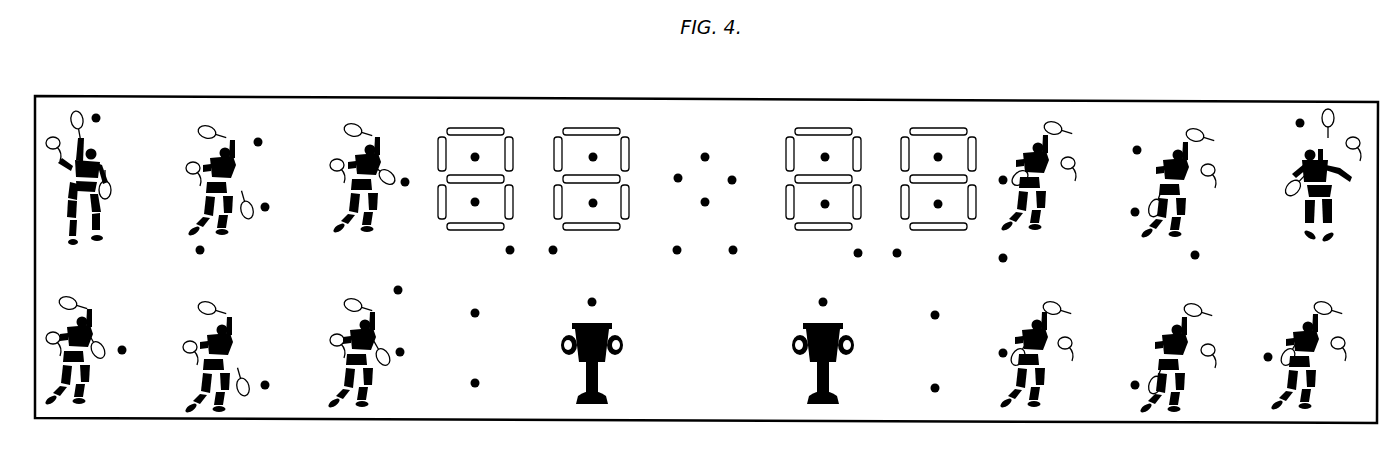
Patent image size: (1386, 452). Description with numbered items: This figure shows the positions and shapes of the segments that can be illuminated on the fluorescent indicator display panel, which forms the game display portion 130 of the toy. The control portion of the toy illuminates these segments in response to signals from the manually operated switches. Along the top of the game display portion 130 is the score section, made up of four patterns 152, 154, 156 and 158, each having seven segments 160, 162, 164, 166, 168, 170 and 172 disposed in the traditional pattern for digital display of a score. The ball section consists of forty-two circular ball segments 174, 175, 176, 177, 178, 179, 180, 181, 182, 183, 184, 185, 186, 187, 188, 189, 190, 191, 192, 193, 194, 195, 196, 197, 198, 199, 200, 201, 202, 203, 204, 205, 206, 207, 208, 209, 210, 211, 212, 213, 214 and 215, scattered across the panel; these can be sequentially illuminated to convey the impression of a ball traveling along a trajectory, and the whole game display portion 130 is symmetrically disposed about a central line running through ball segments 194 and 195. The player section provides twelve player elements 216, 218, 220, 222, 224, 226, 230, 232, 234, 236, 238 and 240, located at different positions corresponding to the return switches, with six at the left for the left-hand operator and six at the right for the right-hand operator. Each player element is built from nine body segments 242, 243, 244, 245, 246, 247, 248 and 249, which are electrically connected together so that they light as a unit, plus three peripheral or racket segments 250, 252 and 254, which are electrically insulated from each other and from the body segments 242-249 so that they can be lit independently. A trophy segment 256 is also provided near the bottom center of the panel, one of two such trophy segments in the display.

The game display portion 130 is at (923, 78).
The pattern 152 is at (455, 152).
The pattern 154 is at (590, 166).
The pattern 156 is at (804, 162).
The pattern 158 is at (938, 163).
The segment 160 is at (455, 128).
The segment 162 is at (510, 140).
The segment 164 is at (977, 215).
The segment 166 is at (948, 231).
The segment 168 is at (903, 228).
The segment 170 is at (905, 140).
The segment 172 is at (910, 180).
The ball segment 174 is at (100, 117).
The ball segment 175 is at (122, 346).
The ball segment 176 is at (196, 250).
The ball segment 177 is at (258, 138).
The ball segment 178 is at (267, 204).
The ball segment 179 is at (265, 381).
The ball segment 180 is at (405, 186).
The ball segment 181 is at (398, 286).
The ball segment 182 is at (401, 348).
The ball segment 183 is at (471, 156).
The ball segment 184 is at (472, 205).
The ball segment 185 is at (474, 309).
The ball segment 186 is at (478, 380).
The ball segment 187 is at (506, 251).
The ball segment 188 is at (553, 254).
The ball segment 189 is at (592, 153).
The ball segment 190 is at (593, 207).
The ball segment 191 is at (588, 302).
The ball segment 192 is at (675, 176).
The ball segment 193 is at (676, 246).
The ball segment 194 is at (705, 153).
The ball segment 195 is at (701, 202).
The ball segment 196 is at (728, 180).
The ball segment 197 is at (732, 254).
The ball segment 198 is at (821, 158).
The ball segment 199 is at (824, 208).
The ball segment 200 is at (821, 300).
The ball segment 201 is at (855, 254).
The ball segment 202 is at (895, 256).
The ball segment 203 is at (934, 157).
The ball segment 204 is at (934, 204).
The ball segment 205 is at (931, 313).
The ball segment 206 is at (931, 386).
The ball segment 207 is at (1001, 178).
The ball segment 208 is at (999, 258).
The ball segment 209 is at (1000, 356).
The ball segment 210 is at (1137, 146).
The ball segment 211 is at (1131, 212).
The ball segment 212 is at (1133, 381).
The ball segment 213 is at (1191, 256).
The ball segment 214 is at (1296, 122).
The ball segment 215 is at (1265, 354).
The player element 216 is at (101, 200).
The player element 218 is at (88, 303).
The player element 220 is at (240, 167).
The player element 222 is at (230, 293).
The player element 224 is at (355, 240).
The player element 226 is at (338, 322).
The player element 230 is at (1065, 198).
The player element 232 is at (1008, 385).
The player element 234 is at (1150, 232).
The player element 236 is at (1140, 338).
The player element 238 is at (1286, 210).
The player element 240 is at (1267, 305).
The body segment 242 is at (95, 151).
The body segment 243 is at (72, 188).
The body segment 244 is at (71, 208).
The body segment 245 is at (71, 230).
The body segment 246 is at (75, 248).
The body segment 247 is at (103, 240).
The body segment 248 is at (102, 225).
The body segment 249 is at (102, 205).
The racket segment 250 is at (52, 136).
The racket segment 252 is at (78, 110).
The racket segment 254 is at (112, 188).
The trophy segment 256 is at (810, 383).